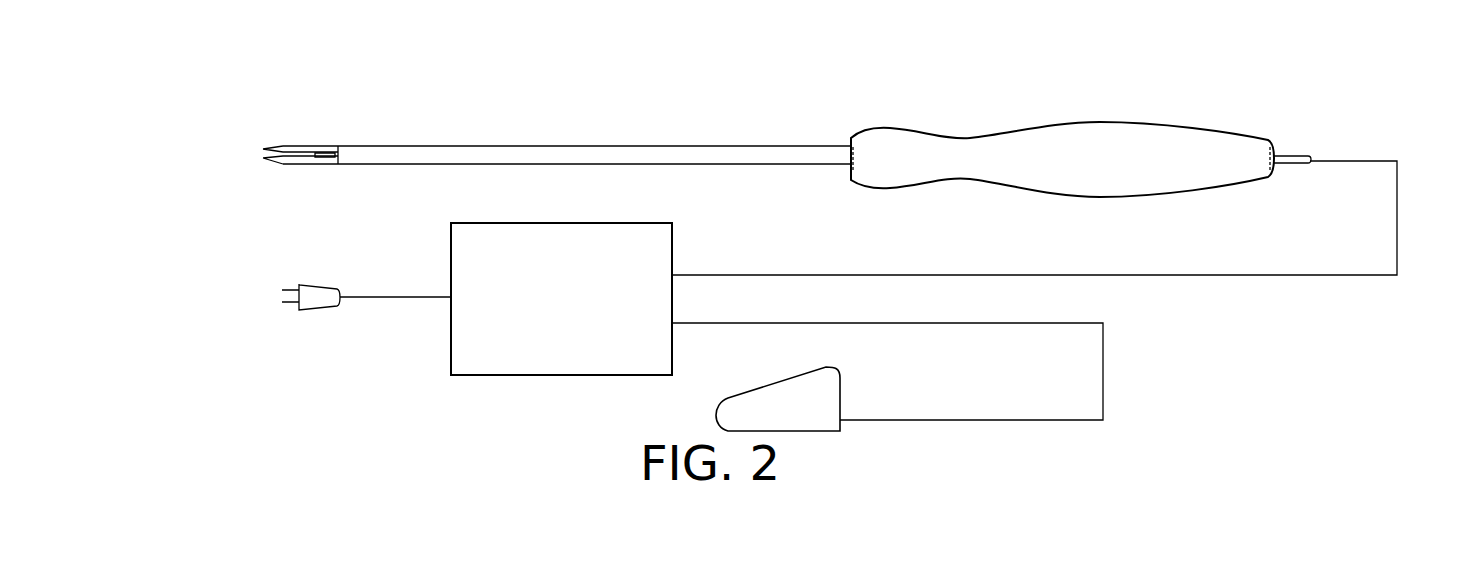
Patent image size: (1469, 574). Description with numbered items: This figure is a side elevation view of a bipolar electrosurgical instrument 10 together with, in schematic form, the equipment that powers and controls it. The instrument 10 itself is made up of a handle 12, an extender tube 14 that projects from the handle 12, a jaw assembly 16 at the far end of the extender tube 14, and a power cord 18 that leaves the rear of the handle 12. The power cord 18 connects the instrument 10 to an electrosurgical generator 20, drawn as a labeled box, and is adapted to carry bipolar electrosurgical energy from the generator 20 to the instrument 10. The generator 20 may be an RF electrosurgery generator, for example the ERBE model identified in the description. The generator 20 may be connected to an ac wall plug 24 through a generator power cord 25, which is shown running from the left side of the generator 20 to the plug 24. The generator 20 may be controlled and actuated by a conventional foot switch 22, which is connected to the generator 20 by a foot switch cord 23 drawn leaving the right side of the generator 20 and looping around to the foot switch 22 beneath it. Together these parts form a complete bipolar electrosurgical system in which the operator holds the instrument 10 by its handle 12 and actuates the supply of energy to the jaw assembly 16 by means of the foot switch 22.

The bipolar electrosurgical instrument 10 is at (825, 93).
The handle 12 is at (1105, 132).
The extender tube 14 is at (588, 150).
The jaw assembly 16 is at (310, 143).
The power cord 18 is at (1292, 155).
The electrosurgical generator 20 is at (561, 299).
The foot switch 22 is at (792, 390).
The foot switch cord 23 is at (1103, 372).
The ac wall plug 24 is at (320, 310).
The generator power cord 25 is at (397, 295).